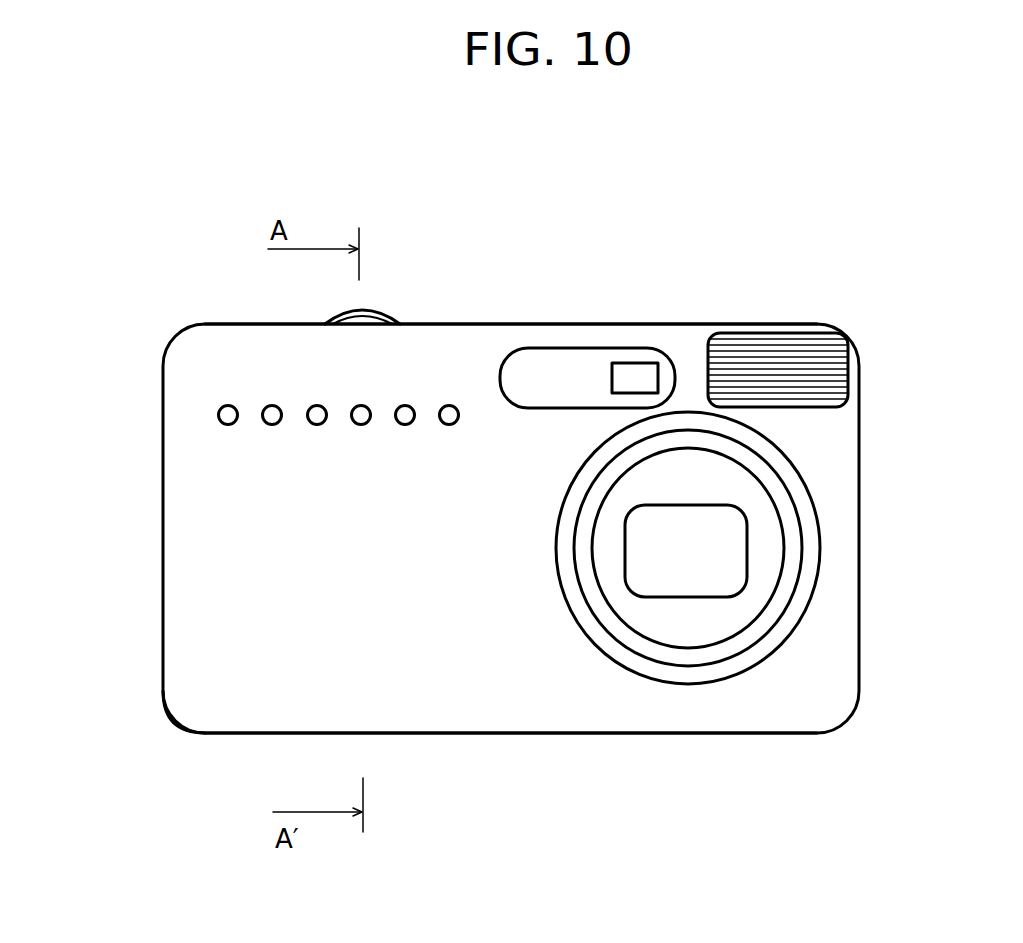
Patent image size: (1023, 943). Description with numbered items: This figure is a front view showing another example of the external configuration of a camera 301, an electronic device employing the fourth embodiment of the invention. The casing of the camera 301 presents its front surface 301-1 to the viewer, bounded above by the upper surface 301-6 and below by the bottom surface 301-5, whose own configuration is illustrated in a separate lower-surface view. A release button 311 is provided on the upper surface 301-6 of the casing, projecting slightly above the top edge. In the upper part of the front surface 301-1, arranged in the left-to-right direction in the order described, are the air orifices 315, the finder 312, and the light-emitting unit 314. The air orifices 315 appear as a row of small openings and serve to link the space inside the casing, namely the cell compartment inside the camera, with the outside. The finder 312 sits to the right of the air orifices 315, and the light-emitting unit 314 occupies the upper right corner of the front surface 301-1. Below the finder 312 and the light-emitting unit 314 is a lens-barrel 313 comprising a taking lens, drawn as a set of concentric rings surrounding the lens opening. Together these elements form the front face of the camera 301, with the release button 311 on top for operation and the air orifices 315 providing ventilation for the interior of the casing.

The camera 301 is at (722, 777).
The front surface 301-1 is at (828, 690).
The bottom surface 301-5 is at (218, 737).
The upper surface 301-6 is at (218, 324).
The release button 311 is at (375, 310).
The finder 312 is at (587, 368).
The lens-barrel 313 is at (802, 518).
The light-emitting unit 314 is at (770, 362).
The air orifices 315 is at (218, 422).